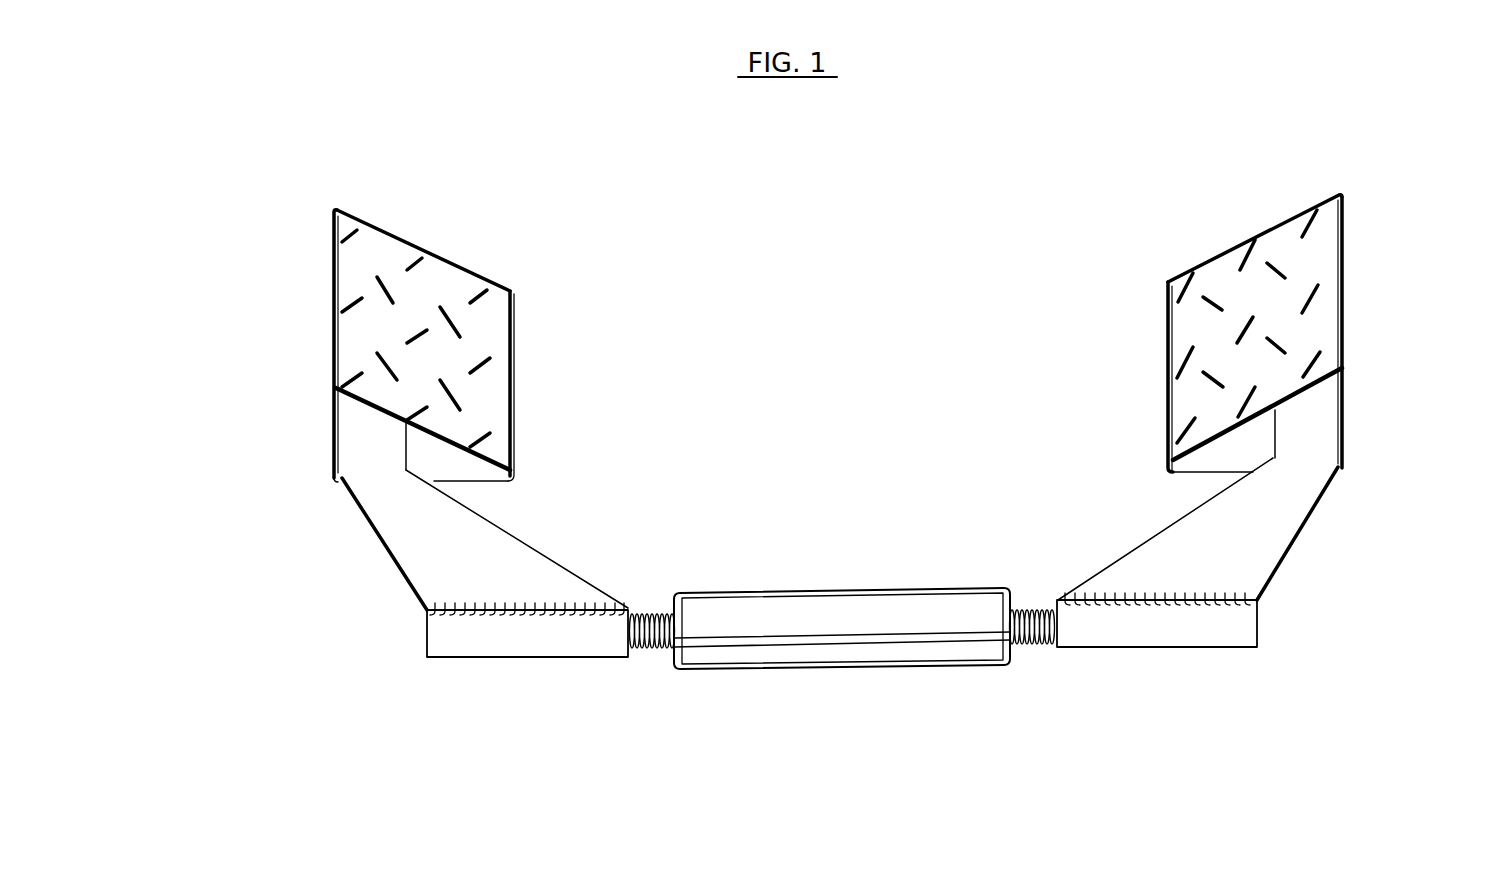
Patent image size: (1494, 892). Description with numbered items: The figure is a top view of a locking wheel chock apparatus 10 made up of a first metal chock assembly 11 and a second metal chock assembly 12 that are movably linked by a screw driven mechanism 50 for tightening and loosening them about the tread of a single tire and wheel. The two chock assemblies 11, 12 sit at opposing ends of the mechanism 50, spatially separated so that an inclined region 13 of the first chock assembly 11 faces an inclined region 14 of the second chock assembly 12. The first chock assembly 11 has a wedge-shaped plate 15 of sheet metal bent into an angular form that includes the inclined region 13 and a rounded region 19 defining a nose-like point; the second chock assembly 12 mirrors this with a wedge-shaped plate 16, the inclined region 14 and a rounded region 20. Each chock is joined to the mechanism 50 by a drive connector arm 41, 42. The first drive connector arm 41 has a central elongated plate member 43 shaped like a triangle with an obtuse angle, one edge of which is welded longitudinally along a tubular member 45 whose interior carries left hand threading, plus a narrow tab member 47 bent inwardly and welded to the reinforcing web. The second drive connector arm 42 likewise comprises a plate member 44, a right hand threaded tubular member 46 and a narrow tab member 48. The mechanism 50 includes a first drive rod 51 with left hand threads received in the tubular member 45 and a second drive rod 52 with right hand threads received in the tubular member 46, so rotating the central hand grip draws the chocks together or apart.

The locking wheel chock apparatus 10 is at (310, 676).
The first metal chock assembly 11 is at (322, 305).
The second metal chock assembly 12 is at (1355, 298).
The inclined region 13 is at (385, 258).
The inclined region 14 is at (1280, 245).
The wedge-shaped plate 15 is at (472, 245).
The wedge-shaped plate 16 is at (1198, 255).
The rounded region 19 is at (516, 378).
The rounded region 20 is at (1168, 357).
The drive connector arm 41 is at (365, 545).
The drive connector arm 42 is at (1328, 542).
The central elongated plate member 43 is at (545, 548).
The central elongated plate member 44 is at (1152, 532).
The tubular member 45 is at (510, 660).
The tubular member 46 is at (1165, 647).
The narrow tab member 47 is at (372, 430).
The narrow tab member 48 is at (1308, 420).
The screw driven mechanism 50 is at (843, 682).
The first drive rod 51 is at (645, 650).
The second drive rod 52 is at (1038, 645).